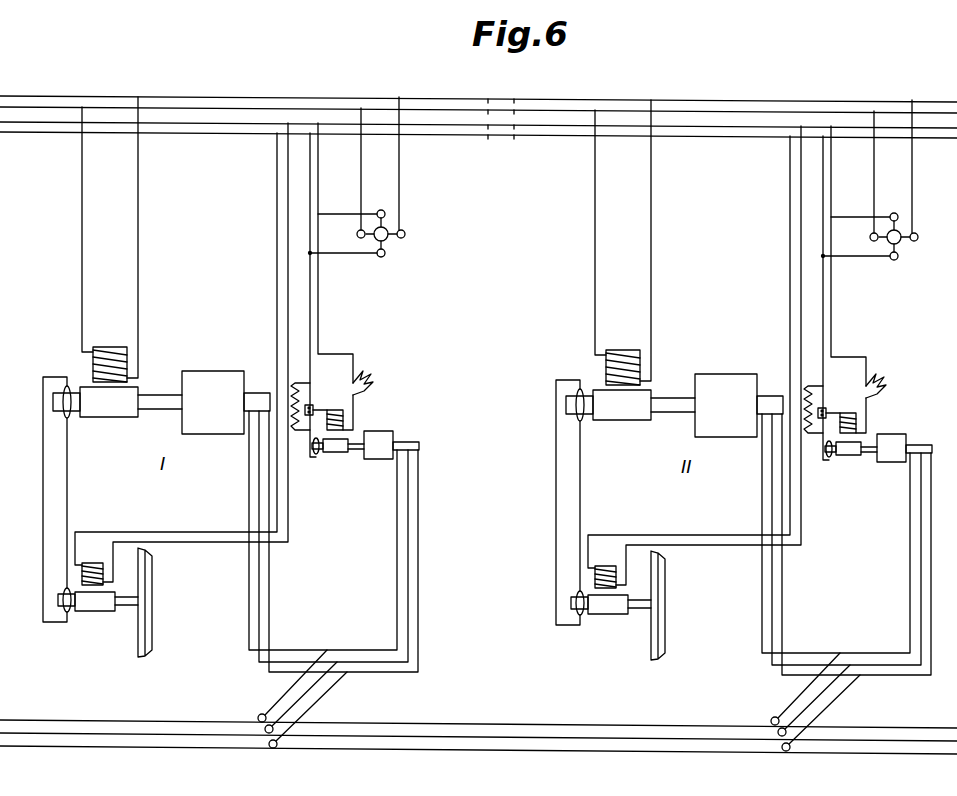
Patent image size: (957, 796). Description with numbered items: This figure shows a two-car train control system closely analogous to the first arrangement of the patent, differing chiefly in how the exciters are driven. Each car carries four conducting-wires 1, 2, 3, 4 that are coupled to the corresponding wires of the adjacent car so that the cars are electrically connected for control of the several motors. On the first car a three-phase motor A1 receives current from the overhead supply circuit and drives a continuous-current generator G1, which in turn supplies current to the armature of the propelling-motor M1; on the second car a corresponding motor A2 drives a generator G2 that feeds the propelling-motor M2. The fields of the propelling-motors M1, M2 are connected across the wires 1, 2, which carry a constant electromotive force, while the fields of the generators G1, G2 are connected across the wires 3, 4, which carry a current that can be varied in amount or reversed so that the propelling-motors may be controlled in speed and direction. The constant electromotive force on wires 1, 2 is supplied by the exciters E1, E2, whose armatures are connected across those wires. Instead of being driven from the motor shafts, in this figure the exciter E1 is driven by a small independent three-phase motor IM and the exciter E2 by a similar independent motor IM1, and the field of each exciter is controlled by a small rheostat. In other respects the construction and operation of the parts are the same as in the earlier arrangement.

The conducting-wire 1 is at (10, 133).
The conducting-wire 2 is at (31, 123).
The conducting-wire 3 is at (15, 96).
The conducting-wire 4 is at (33, 107).
The continuous-current generator G1 is at (95, 394).
The continuous-current generator G2 is at (608, 397).
The three-phase motor A1 is at (226, 402).
The three-phase motor A2 is at (739, 405).
The propelling-motor M1 is at (86, 600).
The propelling-motor M2 is at (599, 603).
The exciter E1 is at (330, 451).
The exciter E2 is at (843, 452).
The independent motor IM is at (391, 436).
The independent motor IM1 is at (909, 439).